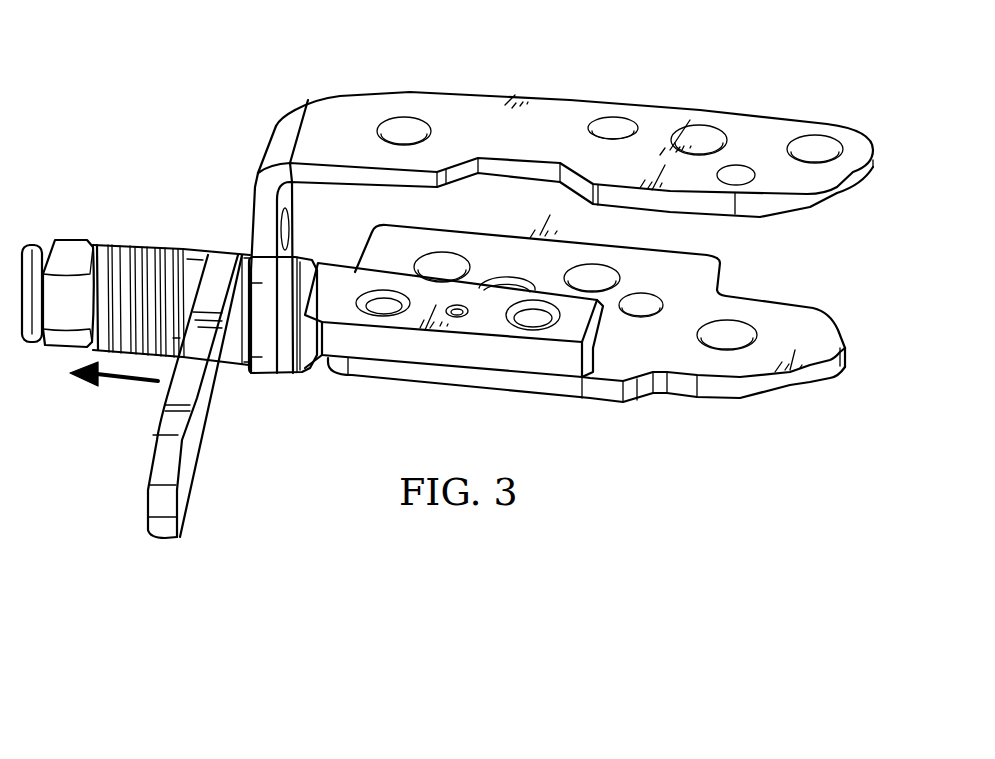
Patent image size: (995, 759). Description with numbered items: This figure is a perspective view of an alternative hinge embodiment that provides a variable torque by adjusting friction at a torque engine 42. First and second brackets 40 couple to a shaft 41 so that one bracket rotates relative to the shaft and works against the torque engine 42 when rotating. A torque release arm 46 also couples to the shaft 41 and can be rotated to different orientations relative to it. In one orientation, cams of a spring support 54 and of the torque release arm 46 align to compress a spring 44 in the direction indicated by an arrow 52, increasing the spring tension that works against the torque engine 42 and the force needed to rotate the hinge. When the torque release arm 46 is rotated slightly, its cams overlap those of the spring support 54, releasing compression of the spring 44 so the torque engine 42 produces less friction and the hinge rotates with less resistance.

The brackets 40 is at (760, 117).
The shaft 41 is at (280, 373).
The torque engine 42 is at (103, 242).
The spring 44 is at (153, 246).
The spring support 54 is at (200, 248).
The torque release arm 46 is at (147, 497).
The arrow 52 is at (120, 383).